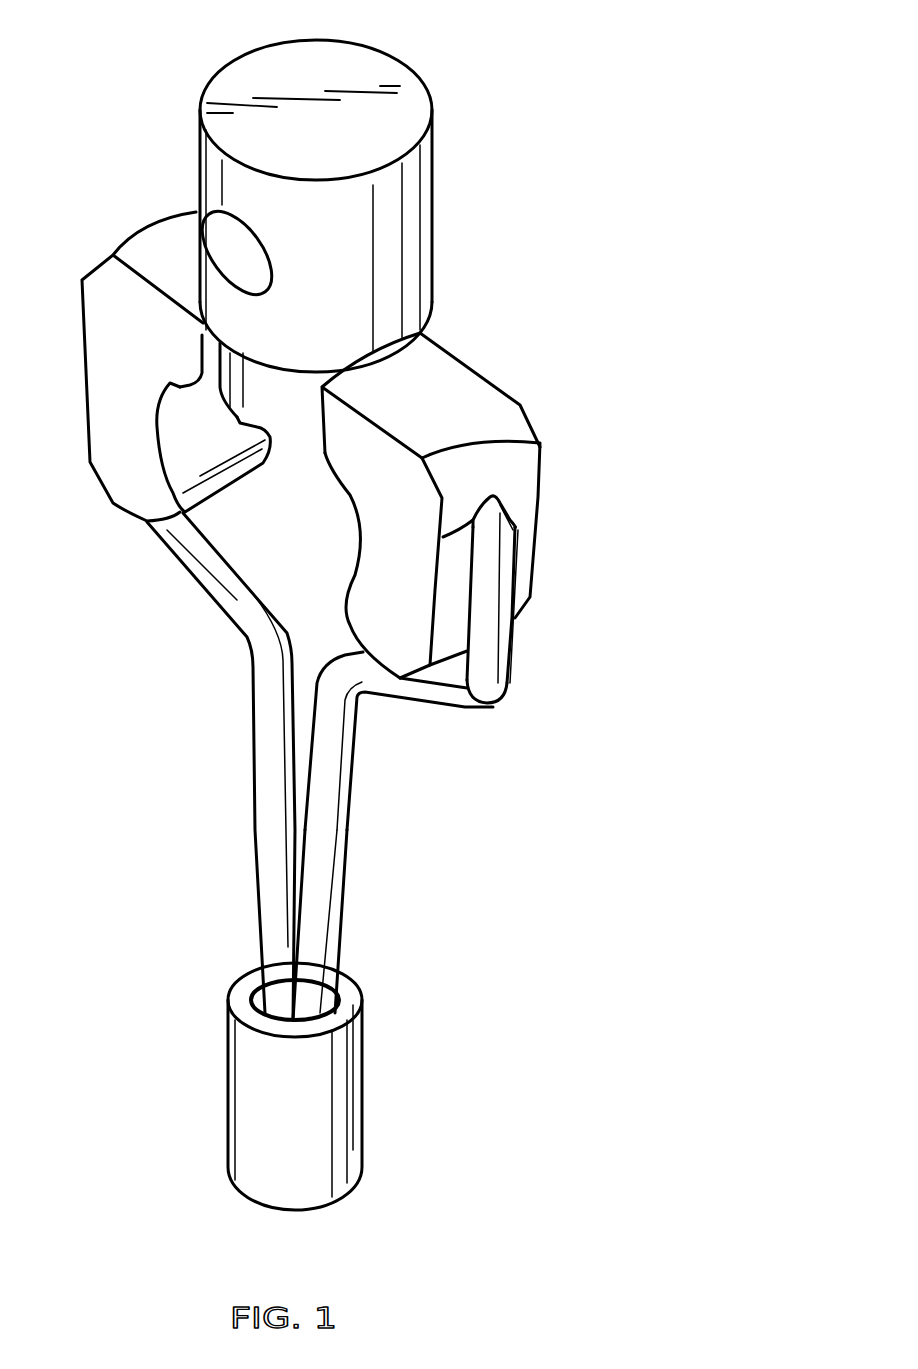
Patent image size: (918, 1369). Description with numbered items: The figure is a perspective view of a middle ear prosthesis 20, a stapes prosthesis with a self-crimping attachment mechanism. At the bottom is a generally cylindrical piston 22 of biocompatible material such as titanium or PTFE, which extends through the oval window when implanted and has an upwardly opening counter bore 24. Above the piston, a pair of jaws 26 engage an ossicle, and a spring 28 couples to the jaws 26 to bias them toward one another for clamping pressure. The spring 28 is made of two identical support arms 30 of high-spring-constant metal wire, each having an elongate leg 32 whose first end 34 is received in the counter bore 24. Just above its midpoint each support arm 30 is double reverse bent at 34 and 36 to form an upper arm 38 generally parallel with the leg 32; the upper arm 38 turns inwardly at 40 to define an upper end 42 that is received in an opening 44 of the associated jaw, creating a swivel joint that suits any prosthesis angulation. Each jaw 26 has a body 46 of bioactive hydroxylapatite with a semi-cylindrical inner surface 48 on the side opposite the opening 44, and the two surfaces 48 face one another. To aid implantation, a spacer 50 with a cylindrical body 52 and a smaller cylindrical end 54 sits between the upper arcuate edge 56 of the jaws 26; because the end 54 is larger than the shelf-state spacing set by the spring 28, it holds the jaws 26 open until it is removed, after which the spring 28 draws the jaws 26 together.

The middle ear prosthesis 20 is at (606, 244).
The cylindrical piston 22 is at (315, 1068).
The counter bore 24 is at (257, 990).
The jaws 26 is at (120, 438).
The spring 28 is at (386, 758).
The support arms 30 is at (257, 867).
The elongate leg 32 is at (320, 910).
The first end / first reverse bend 34 is at (363, 697).
The second reverse bend 36 is at (483, 690).
The upper arm 38 is at (530, 595).
The inward turn 40 is at (495, 530).
The upper end 42 is at (513, 522).
The opening 44 is at (443, 537).
The body 46 is at (461, 505).
The semi-cylindrical inner surface 48 is at (213, 460).
The spacer 50 is at (338, 63).
The cylindrical body 52 is at (390, 258).
The smaller cylindrical end 54 is at (240, 427).
The upper arcuate edge 56 is at (212, 350).